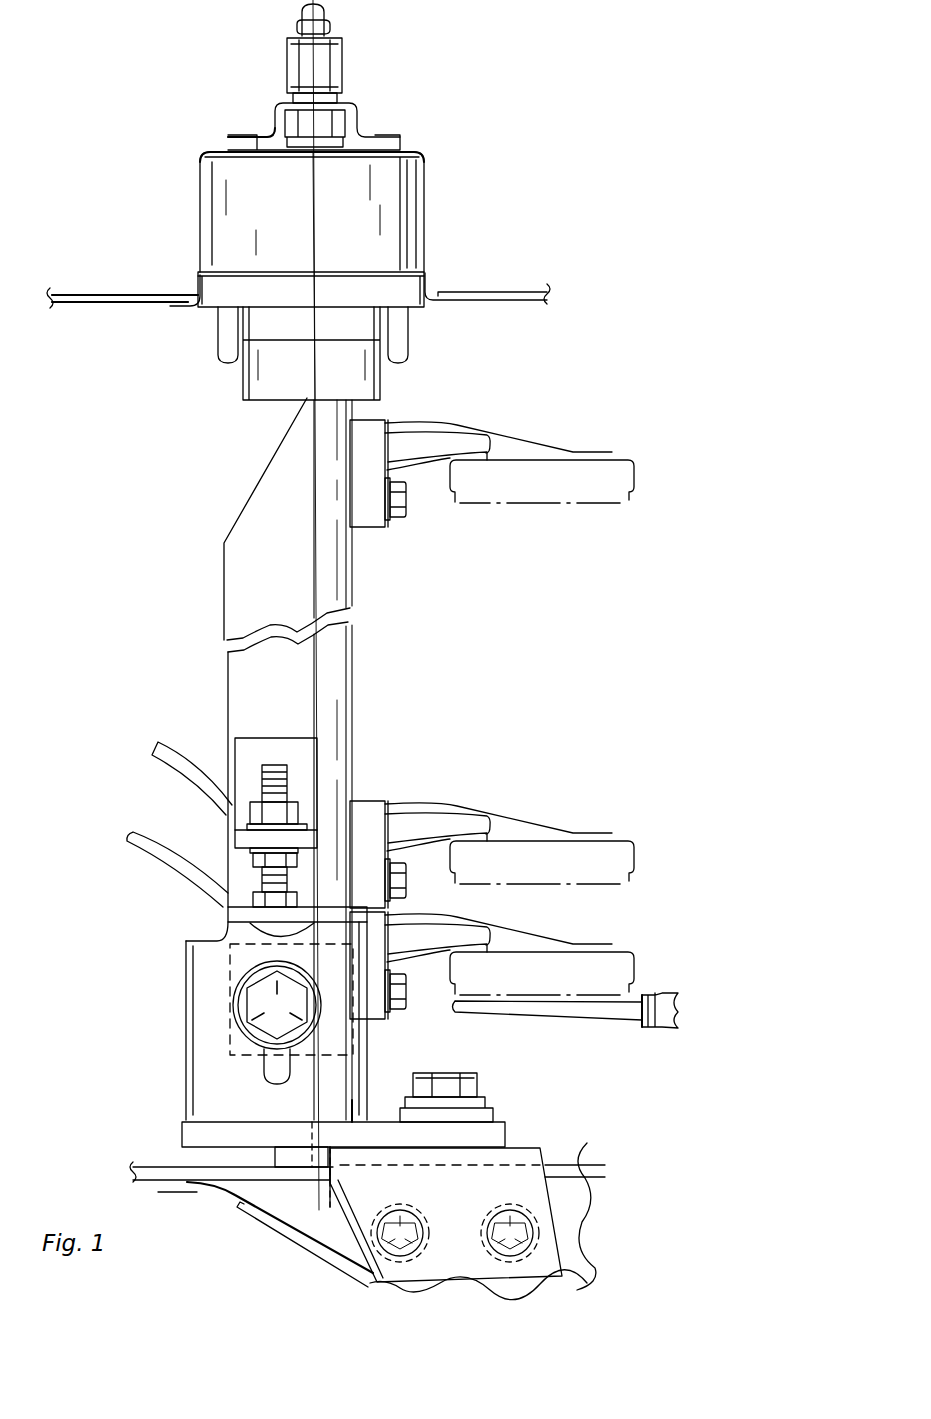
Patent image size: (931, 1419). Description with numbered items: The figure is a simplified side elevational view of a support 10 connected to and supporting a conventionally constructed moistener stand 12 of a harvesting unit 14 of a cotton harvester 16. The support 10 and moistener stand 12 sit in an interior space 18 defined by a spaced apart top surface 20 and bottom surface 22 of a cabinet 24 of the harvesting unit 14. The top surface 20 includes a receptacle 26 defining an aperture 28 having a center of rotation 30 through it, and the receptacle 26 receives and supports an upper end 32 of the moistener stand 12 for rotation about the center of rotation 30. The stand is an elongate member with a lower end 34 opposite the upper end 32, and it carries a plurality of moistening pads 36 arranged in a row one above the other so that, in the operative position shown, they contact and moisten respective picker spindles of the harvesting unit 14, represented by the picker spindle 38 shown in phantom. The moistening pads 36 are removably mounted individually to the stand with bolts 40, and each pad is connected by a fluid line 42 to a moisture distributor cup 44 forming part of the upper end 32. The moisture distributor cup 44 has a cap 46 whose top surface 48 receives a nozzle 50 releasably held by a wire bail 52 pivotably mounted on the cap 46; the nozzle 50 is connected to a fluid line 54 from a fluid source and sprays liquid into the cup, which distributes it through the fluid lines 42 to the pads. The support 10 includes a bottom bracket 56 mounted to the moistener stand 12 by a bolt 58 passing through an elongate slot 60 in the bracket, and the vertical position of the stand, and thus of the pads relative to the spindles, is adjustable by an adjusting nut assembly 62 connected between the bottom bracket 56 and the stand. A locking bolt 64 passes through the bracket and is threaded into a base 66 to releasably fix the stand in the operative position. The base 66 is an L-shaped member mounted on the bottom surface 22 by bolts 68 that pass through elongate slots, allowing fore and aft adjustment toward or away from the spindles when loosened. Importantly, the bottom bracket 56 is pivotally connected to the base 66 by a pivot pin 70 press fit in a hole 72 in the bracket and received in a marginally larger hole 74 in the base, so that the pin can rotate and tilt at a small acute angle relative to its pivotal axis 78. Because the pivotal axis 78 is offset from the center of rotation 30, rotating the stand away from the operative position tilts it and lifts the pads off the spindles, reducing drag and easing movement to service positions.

The support 10 is at (552, 1223).
The moistener stand 12 is at (354, 672).
The harvesting unit 14 is at (672, 1030).
The cotton harvester 16 is at (586, 130).
The interior space 18 is at (134, 333).
The top surface 20 is at (80, 304).
The bottom surface 22 is at (155, 1162).
The cabinet 24 is at (77, 296).
The receptacle 26 is at (197, 285).
The aperture 28 is at (215, 295).
The center of rotation 30 is at (313, 245).
The upper end 32 is at (425, 207).
The lower end 34 is at (205, 963).
The moistening pads 36 is at (634, 474).
The picker spindle 38 is at (555, 1020).
The bolts 40 is at (408, 518).
The fluid line 42 is at (218, 335).
The moisture distributor cup 44 is at (433, 310).
The cap 46 is at (425, 172).
The top surface 48 is at (267, 136).
The nozzle 50 is at (360, 128).
The wire bail 52 is at (352, 108).
The fluid line 54 is at (328, 14).
The bottom bracket 56 is at (505, 1136).
The bolt 58 is at (232, 1005).
The elongate slot 60 is at (264, 1078).
The adjusting nut assembly 62 is at (300, 797).
The locking bolt 64 is at (478, 1082).
The base 66 is at (550, 1202).
The bolts 68 is at (423, 1252).
The pivot pin 70 is at (410, 1148).
The hole 72 is at (355, 1122).
The hole 74 is at (340, 1160).
The pivotal axis 78 is at (332, 1208).